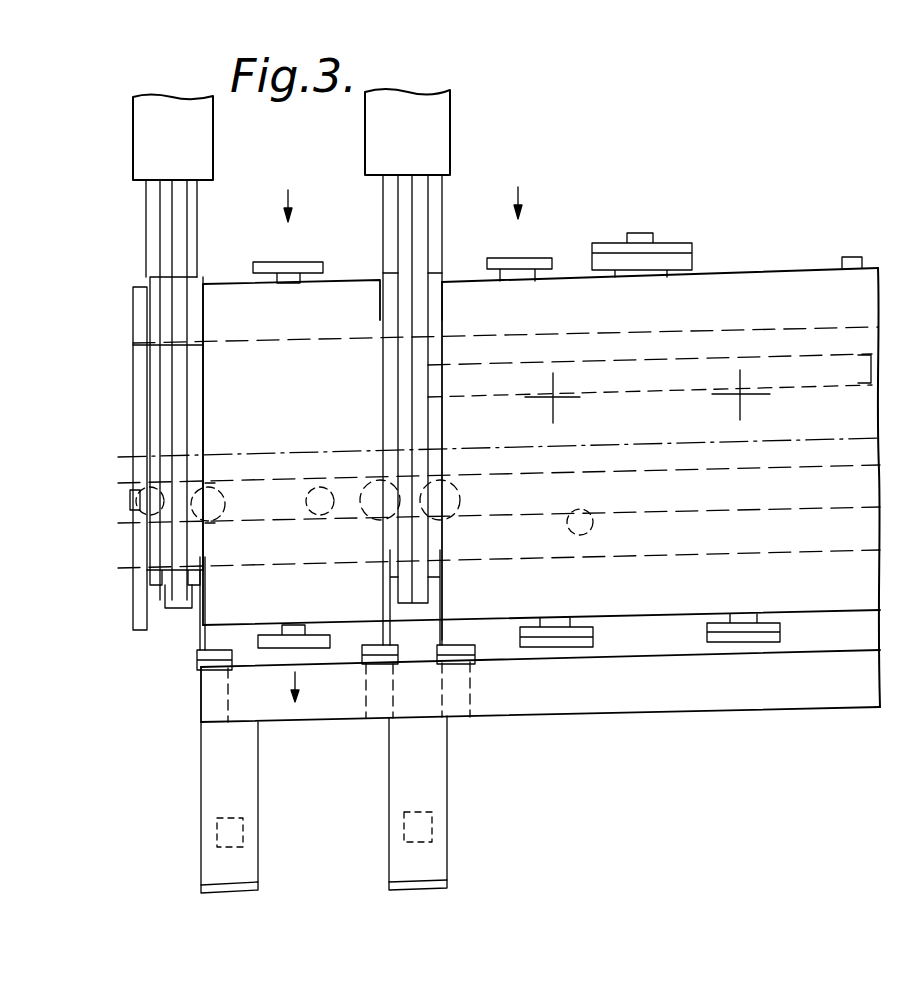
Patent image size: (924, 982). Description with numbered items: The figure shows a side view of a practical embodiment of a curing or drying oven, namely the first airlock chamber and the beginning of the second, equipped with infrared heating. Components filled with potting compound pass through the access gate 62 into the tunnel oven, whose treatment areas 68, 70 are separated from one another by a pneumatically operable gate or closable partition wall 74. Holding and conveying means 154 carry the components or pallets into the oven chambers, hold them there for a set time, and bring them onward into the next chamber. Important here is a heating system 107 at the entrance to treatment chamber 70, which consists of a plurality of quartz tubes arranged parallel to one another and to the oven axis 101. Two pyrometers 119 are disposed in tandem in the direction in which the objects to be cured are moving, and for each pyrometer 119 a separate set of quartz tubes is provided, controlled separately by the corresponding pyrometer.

The access gate 62 is at (192, 205).
The treatment area 68 is at (360, 350).
The treatment area 70 is at (480, 338).
The closable partition wall 74 is at (430, 197).
The oven axis 101 is at (852, 440).
The heating system 107 is at (700, 365).
The pyrometer 119 is at (553, 395).
The holding and conveying means 154 is at (262, 515).